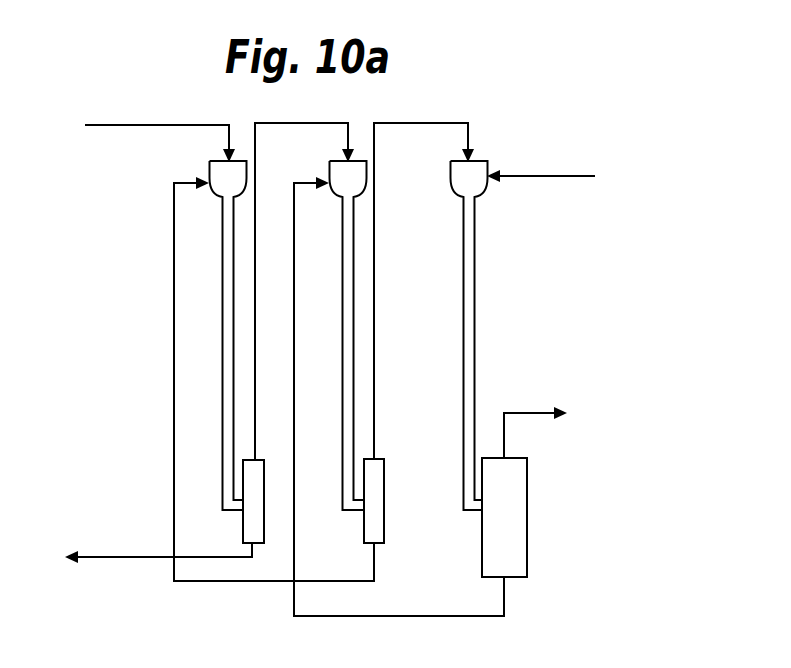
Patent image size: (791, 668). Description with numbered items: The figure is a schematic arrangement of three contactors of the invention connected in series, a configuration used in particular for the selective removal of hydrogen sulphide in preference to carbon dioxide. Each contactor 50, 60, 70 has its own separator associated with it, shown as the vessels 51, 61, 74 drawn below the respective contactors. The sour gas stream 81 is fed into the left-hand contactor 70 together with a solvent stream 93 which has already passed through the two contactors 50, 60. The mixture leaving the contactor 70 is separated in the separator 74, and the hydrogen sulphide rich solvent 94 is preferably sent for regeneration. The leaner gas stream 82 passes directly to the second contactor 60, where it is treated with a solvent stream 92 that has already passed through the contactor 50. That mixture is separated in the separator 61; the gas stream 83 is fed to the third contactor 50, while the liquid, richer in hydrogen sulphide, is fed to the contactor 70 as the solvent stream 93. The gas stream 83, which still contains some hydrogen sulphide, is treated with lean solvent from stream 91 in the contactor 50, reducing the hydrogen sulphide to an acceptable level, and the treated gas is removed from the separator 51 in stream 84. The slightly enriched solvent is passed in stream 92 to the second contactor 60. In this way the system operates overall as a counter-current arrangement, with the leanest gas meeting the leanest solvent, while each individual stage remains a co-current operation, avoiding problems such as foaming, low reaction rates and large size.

The contactor 50 is at (474, 322).
The separator 51 is at (527, 522).
The contactor 60 is at (354, 350).
The separator 61 is at (384, 505).
The contactor 70 is at (222, 355).
The first separator vessel 74 is at (264, 505).
The sour gas stream 81 is at (146, 137).
The leaner gas stream 82 is at (304, 279).
The gas stream 83 is at (424, 279).
The stream 84 is at (535, 422).
The stream 91 is at (555, 176).
The solvent stream 92 is at (399, 396).
The solvent stream 93 is at (274, 381).
The H2S rich solvent 94 is at (158, 564).